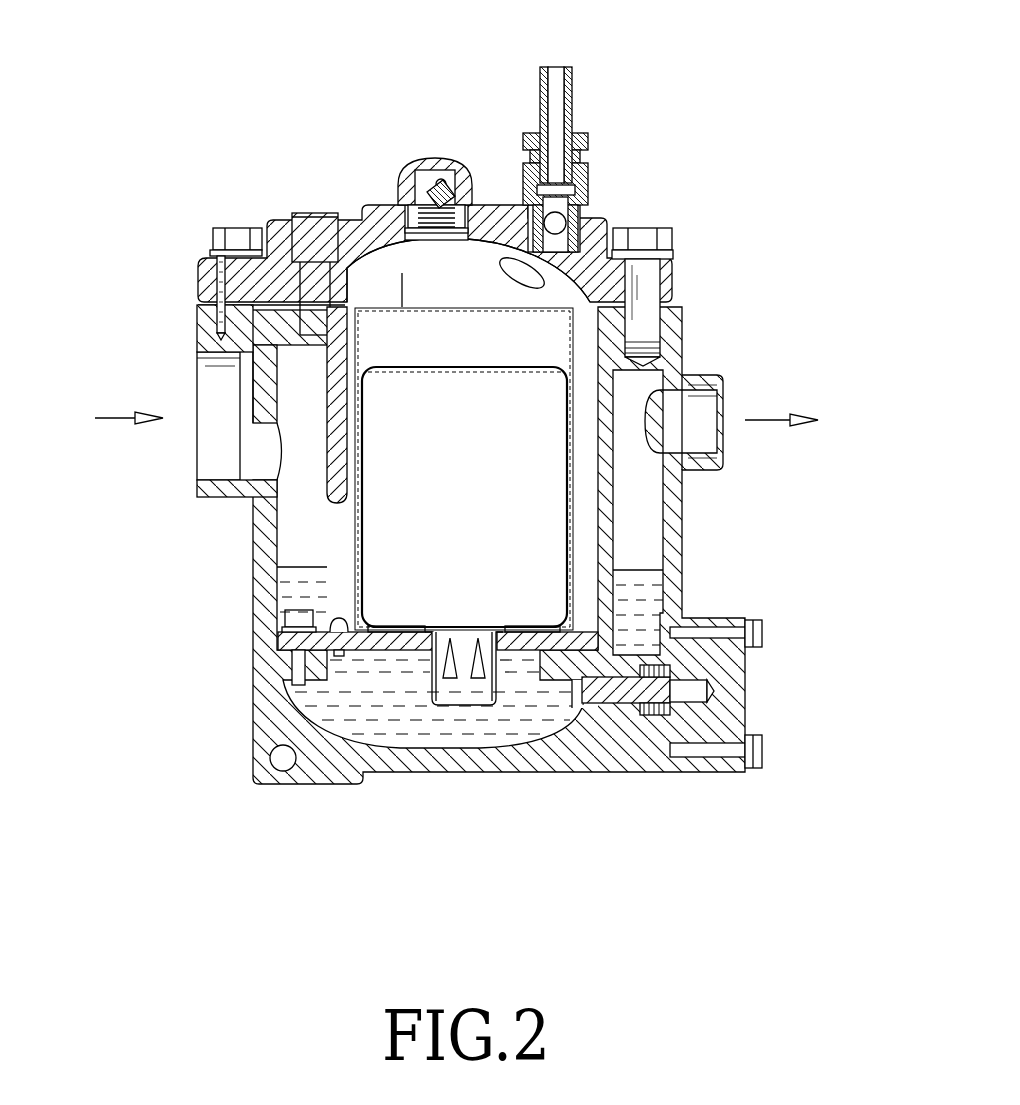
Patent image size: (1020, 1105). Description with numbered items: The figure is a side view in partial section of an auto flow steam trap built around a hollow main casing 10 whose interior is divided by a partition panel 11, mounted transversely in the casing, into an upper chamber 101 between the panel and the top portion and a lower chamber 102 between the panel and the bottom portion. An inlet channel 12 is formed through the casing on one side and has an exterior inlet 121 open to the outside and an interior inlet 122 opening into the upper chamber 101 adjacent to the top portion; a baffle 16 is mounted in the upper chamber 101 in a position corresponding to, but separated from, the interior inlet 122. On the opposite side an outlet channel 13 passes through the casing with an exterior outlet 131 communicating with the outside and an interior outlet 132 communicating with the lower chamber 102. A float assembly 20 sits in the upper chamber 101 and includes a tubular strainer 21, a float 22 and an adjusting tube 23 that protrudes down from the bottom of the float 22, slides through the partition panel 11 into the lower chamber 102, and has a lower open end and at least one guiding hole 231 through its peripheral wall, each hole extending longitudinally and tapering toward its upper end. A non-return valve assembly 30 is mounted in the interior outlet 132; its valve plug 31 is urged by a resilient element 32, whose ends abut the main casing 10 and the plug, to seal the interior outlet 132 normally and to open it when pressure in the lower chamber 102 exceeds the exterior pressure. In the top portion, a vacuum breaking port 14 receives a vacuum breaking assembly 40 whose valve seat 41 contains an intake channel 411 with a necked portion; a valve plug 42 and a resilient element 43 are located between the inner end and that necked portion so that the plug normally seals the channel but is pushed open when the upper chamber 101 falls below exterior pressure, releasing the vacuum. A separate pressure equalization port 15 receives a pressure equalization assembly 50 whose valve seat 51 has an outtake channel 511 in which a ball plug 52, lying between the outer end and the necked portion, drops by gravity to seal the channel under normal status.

The main casing 10 is at (263, 668).
The upper chamber 101 is at (370, 273).
The lower chamber 102 is at (412, 715).
The partition panel 11 is at (363, 643).
The inlet channel 12 is at (161, 438).
The exterior inlet 121 is at (226, 343).
The interior inlet 122 is at (255, 478).
The outlet channel 13 is at (722, 613).
The exterior outlet 131 is at (700, 387).
The interior outlet 132 is at (582, 718).
The vacuum breaking port 14 is at (480, 207).
The pressure equalization port 15 is at (568, 271).
The baffle 16 is at (337, 478).
The float assembly 20 is at (453, 466).
The tubular strainer 21 is at (367, 305).
The float 22 is at (380, 363).
The adjusting tube 23 is at (497, 741).
The guiding hole 231 is at (477, 678).
The non-return valve assembly 30 is at (719, 709).
The valve plug 31 is at (618, 697).
The resilient element 32 is at (652, 707).
The vacuum breaking assembly 40 is at (437, 150).
The valve seat 41 is at (368, 130).
The intake channel 411 is at (437, 178).
The valve plug 42 is at (430, 192).
The resilient element 43 is at (420, 203).
The pressure equalization assembly 50 is at (586, 70).
The valve seat 51 is at (617, 130).
The outtake channel 511 is at (566, 210).
The ball plug 52 is at (560, 224).